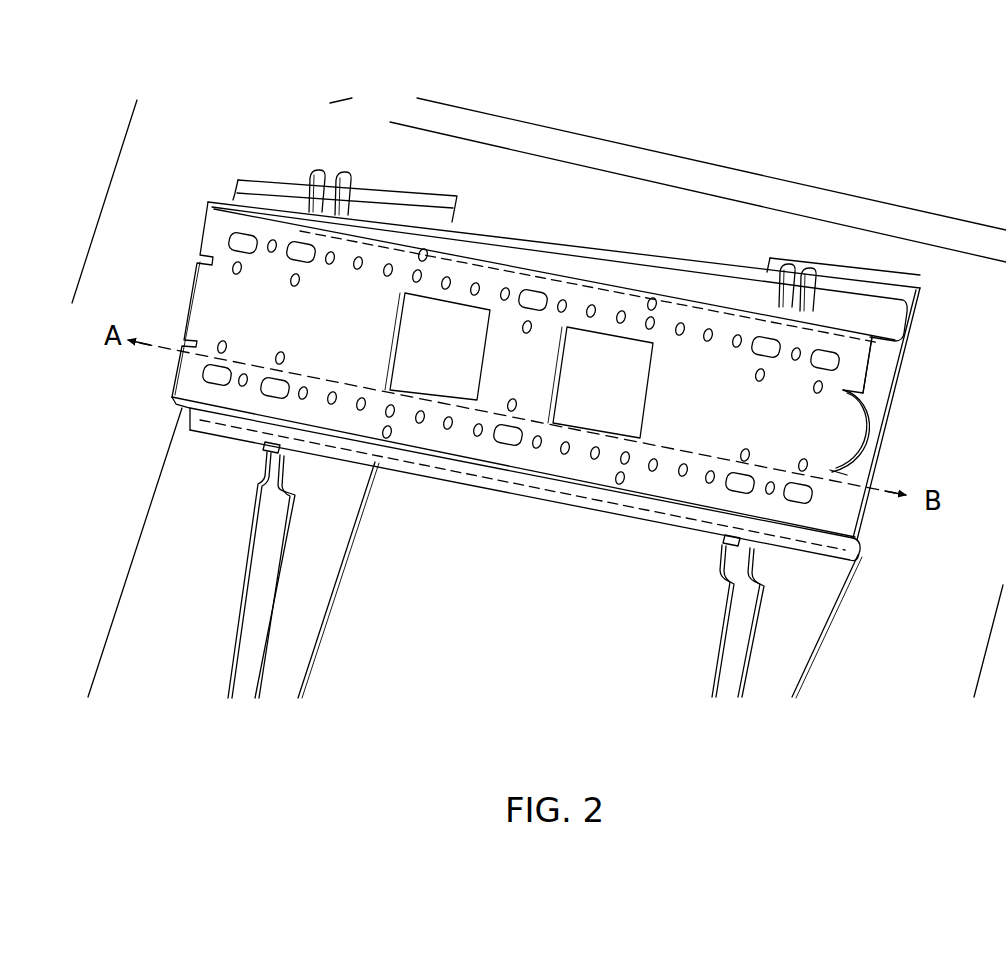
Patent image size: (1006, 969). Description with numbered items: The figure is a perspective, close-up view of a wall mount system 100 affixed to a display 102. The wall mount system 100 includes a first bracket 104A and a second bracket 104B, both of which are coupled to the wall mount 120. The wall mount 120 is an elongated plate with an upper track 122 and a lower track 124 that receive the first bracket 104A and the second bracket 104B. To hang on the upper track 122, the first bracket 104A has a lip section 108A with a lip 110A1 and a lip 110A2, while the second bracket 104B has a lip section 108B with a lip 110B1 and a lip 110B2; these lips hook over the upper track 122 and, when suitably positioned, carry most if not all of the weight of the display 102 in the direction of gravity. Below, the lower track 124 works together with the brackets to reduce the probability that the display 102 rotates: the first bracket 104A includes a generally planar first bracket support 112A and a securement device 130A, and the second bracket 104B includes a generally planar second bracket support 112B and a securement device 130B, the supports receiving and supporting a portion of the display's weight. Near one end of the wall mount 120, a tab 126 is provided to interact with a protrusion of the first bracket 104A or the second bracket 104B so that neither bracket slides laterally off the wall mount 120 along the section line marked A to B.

The wall mount system 100 is at (571, 342).
The display 102 is at (893, 200).
The first bracket 104A is at (308, 645).
The second bracket 104B is at (796, 672).
The lip section 108A is at (334, 137).
The lip section 108B is at (816, 223).
The lip 110A1 is at (317, 188).
The lip 110A2 is at (342, 208).
The lip 110B1 is at (782, 300).
The lip 110B2 is at (808, 305).
The first bracket support 112A is at (296, 570).
The second bracket support 112B is at (757, 616).
The wall mount 120 is at (445, 438).
The upper track 122 is at (643, 263).
The lower track 124 is at (533, 487).
The tab 126 is at (867, 438).
The securement device 130A is at (270, 450).
The securement device 130B is at (728, 542).